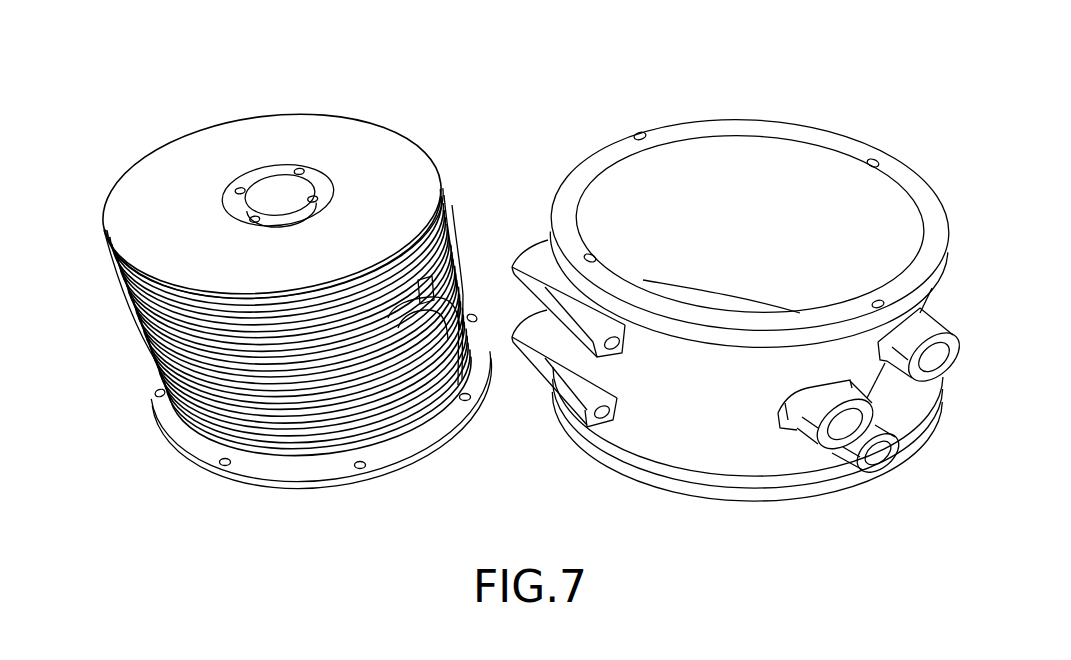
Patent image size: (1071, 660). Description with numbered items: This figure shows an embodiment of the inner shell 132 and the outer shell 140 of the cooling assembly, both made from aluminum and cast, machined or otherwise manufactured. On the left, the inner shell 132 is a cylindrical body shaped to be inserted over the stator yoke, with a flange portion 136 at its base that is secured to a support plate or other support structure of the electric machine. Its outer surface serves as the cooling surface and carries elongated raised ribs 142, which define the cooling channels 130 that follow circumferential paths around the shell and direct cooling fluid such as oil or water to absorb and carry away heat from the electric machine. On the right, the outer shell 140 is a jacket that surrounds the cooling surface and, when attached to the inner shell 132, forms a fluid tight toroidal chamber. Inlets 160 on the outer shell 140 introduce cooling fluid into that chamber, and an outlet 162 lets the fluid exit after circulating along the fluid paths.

The cooling channels 130 is at (413, 375).
The inner shell 132 is at (328, 137).
The flange portion 136 is at (250, 470).
The ribs 142 is at (160, 354).
The outer shell 140 is at (712, 130).
The inlets 160 is at (925, 335).
The outlets 162 is at (864, 466).